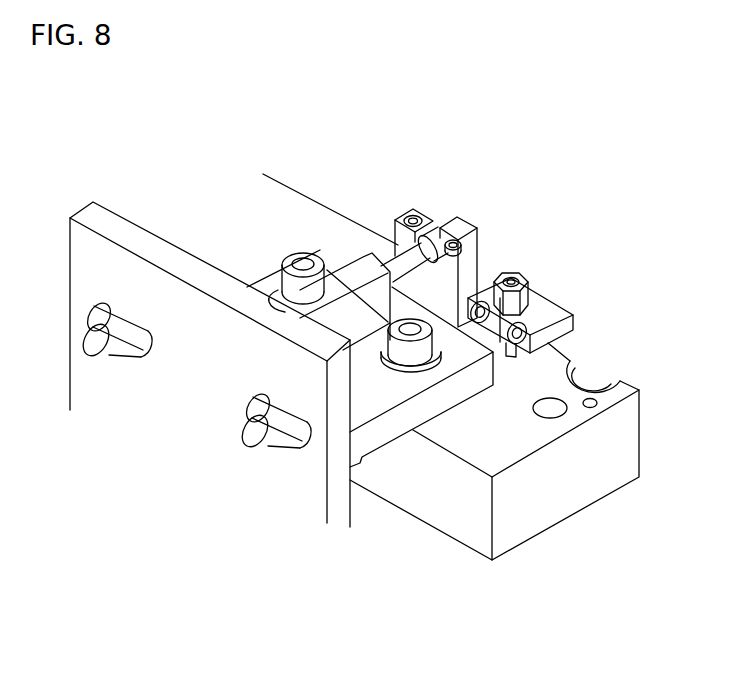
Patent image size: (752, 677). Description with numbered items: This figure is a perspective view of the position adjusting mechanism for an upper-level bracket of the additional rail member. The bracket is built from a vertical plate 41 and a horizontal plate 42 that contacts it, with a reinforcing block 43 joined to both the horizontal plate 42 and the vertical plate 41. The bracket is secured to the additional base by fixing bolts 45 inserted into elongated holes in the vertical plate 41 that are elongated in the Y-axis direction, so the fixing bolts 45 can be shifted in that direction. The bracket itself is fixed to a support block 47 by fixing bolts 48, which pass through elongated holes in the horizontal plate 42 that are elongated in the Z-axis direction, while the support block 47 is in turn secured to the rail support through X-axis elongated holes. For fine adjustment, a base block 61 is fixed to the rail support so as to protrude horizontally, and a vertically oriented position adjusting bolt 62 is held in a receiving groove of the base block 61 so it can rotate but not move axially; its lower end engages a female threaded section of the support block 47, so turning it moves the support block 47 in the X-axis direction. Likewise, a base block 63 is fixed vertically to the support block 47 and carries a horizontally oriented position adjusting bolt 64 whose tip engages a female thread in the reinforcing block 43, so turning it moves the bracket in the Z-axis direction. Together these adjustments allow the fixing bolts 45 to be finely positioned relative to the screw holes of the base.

The vertical plate 41 is at (113, 268).
The horizontal plate 42 is at (363, 573).
The reinforcing block 43 is at (357, 270).
The fixing bolts 45 is at (116, 338).
The support block 47 is at (628, 588).
The fixing bolts 48 is at (262, 278).
The base block 61 is at (552, 306).
The position adjusting bolt 62 is at (512, 276).
The base block 63 is at (398, 238).
The position adjusting bolt 64 is at (456, 217).